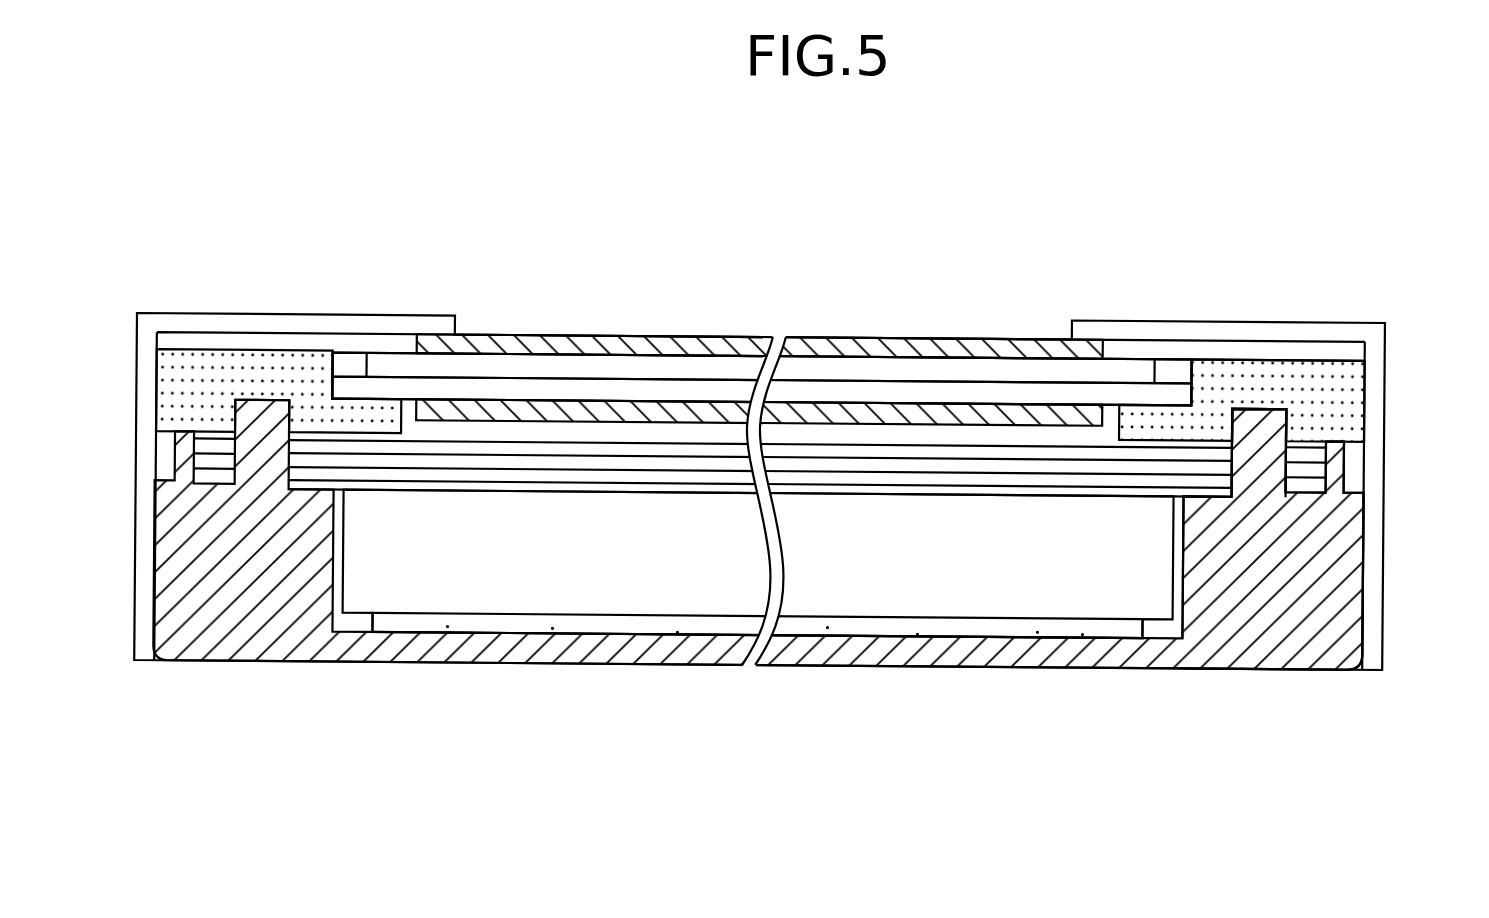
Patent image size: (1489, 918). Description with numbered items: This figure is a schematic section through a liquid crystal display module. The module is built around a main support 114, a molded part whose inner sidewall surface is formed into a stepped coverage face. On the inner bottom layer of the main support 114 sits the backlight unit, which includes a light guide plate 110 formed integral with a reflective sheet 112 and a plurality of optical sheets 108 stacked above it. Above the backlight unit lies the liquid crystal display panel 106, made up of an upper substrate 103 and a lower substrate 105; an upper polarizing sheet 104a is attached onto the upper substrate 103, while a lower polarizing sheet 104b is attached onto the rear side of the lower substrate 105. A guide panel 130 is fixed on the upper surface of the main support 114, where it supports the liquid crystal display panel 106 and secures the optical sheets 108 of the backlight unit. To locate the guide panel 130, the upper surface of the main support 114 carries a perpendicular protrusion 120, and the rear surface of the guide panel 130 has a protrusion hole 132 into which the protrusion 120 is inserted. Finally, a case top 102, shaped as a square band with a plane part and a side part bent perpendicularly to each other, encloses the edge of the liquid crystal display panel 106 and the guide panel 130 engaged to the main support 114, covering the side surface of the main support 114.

The case top 102 is at (1277, 330).
The upper substrate 103 is at (943, 368).
The upper polarizing sheet 104a is at (555, 334).
The lower polarizing sheet 104b is at (622, 405).
The lower substrate 105 is at (1013, 392).
The liquid crystal display panel 106 is at (1015, 282).
The optical sheets 108 is at (545, 448).
The light guide plate 110 is at (617, 603).
The reflective sheet 112 is at (560, 623).
The main support 114 is at (1202, 657).
The protrusion 120 is at (1232, 410).
The guide panel 130 is at (1360, 420).
The protrusion hole 132 is at (1287, 412).